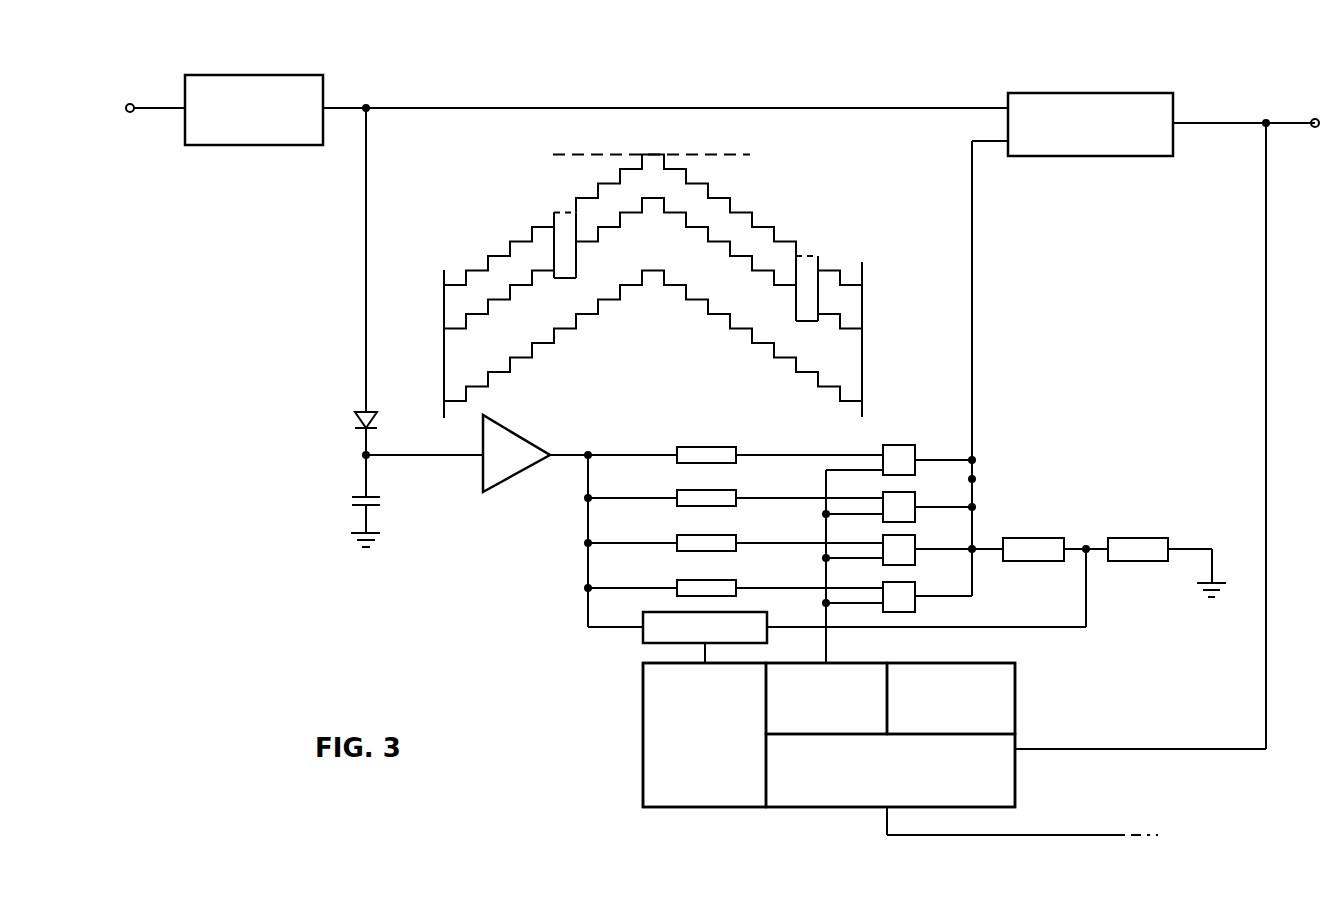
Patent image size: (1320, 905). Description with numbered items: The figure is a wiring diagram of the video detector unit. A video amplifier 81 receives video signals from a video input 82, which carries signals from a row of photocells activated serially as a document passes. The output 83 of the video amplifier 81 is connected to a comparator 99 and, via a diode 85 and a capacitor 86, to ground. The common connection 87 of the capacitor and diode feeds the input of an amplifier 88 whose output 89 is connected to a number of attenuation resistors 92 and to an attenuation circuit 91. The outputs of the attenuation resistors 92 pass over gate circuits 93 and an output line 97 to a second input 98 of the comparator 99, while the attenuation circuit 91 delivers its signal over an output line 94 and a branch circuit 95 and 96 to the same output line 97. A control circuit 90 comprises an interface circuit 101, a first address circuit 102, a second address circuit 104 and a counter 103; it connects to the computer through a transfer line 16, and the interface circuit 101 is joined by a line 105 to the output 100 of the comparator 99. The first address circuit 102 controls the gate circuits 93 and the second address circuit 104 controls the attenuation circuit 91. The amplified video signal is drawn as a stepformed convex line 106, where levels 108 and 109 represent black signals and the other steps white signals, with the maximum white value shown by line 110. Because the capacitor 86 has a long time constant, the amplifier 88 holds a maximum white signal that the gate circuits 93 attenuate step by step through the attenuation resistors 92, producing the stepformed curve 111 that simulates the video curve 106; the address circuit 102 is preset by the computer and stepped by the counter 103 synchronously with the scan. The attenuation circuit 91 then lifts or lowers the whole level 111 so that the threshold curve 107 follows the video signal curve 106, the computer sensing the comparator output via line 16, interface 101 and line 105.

The transfer line 16 is at (1053, 836).
The video amplifier 81 is at (235, 147).
The video input 82 is at (134, 104).
The output of the video amplifier 83 is at (368, 104).
The diode 85 is at (355, 420).
The capacitor 86 is at (352, 497).
The common connection 87 is at (366, 455).
The amplifier 88 is at (505, 433).
The output of the amplifier 89 is at (590, 452).
The control circuit 90 is at (1040, 697).
The attenuation circuit 91 is at (643, 641).
The attenuation resistors 92 is at (692, 463).
The gate circuits 93 is at (905, 470).
The output line 94 is at (992, 627).
The branch circuit 95 is at (1040, 540).
The branch circuit 96 is at (1125, 540).
The output line 97 is at (975, 479).
The second input 98 is at (972, 241).
The comparator 99 is at (1076, 157).
The output of the comparator 100 is at (1312, 118).
The interface circuit 101 is at (1007, 783).
The first address circuit 102 is at (853, 663).
The counter 103 is at (973, 663).
The second address circuit 104 is at (660, 690).
The line 105 is at (1265, 195).
The stepformed line 106 is at (712, 190).
The threshold level curve 107 is at (846, 325).
The level 108 is at (563, 282).
The level 109 is at (803, 322).
The maximum white line 110 is at (566, 153).
The stepformed attenuation curve 111 is at (818, 380).